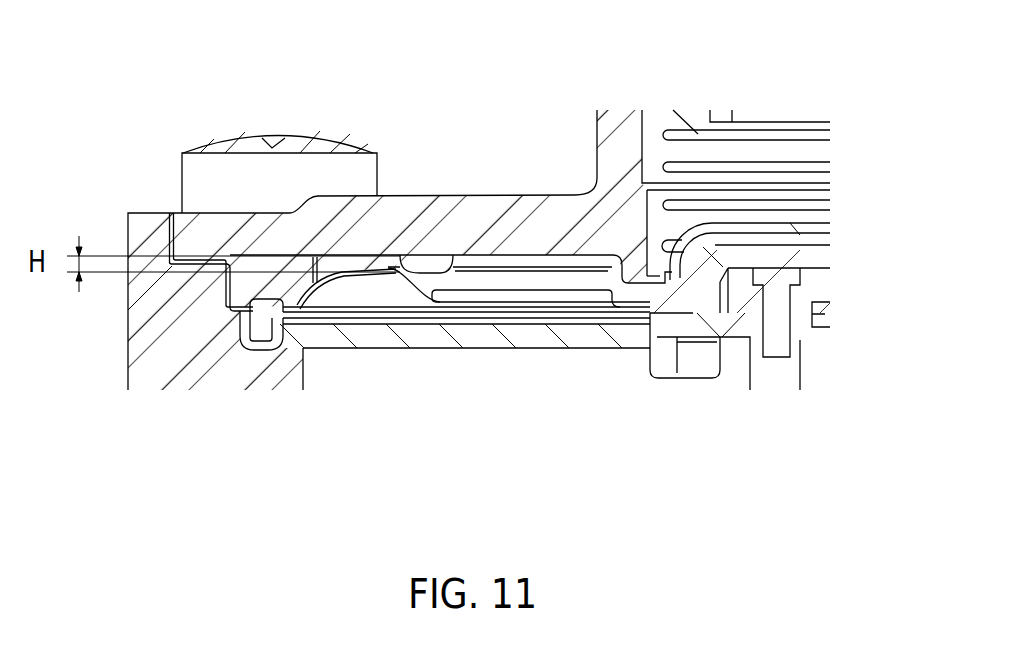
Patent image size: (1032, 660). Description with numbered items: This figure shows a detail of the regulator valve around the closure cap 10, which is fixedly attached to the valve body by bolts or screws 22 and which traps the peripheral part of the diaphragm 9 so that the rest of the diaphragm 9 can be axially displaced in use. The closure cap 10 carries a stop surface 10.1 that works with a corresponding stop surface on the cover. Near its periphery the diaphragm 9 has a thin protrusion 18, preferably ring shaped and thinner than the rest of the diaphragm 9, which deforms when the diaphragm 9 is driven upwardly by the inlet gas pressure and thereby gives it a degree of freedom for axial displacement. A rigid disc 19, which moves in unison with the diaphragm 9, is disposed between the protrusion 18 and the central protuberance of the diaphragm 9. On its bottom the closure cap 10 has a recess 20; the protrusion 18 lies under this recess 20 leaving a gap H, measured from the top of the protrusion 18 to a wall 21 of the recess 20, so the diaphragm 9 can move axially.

The diaphragm 9 is at (483, 312).
The closure cap 10 is at (472, 215).
The stop surface 10.1 is at (597, 268).
The thin protrusion 18 is at (360, 275).
The rigid disc 19 is at (573, 296).
The recess 20 is at (490, 268).
The wall 21 is at (400, 268).
The screws 22 is at (205, 178).